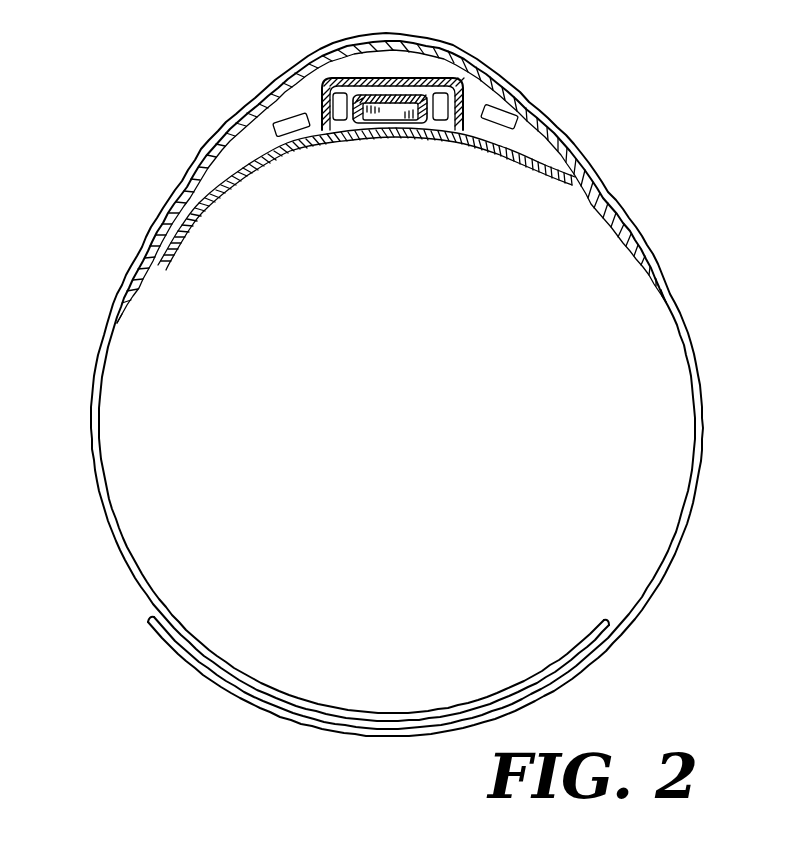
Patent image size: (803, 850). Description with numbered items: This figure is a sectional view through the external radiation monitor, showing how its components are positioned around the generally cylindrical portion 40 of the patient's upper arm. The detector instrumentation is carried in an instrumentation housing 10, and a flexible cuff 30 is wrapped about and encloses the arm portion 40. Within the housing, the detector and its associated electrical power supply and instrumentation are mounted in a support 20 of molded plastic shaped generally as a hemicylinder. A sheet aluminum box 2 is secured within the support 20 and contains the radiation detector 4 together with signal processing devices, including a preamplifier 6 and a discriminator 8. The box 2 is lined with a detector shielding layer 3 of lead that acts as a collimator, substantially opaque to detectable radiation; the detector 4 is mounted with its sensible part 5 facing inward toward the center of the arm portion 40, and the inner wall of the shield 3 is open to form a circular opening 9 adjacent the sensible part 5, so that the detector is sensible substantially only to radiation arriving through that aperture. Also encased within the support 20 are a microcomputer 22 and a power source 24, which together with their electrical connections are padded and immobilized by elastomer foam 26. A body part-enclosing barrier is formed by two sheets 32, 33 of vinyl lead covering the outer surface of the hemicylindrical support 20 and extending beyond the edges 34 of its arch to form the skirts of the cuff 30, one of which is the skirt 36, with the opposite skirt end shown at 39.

The sheet aluminum box 2 is at (355, 78).
The detector shielding layer 3 is at (428, 78).
The radiation detector 4 is at (378, 130).
The sensible part 5 is at (392, 130).
The preamplifier 6 is at (340, 128).
The discriminator 8 is at (437, 130).
The circular opening 9 is at (410, 130).
The instrumentation housing 10 is at (548, 62).
The support 20 is at (608, 190).
The microcomputer 22 is at (261, 104).
The power source 24 is at (530, 110).
The elastomer foam 26 is at (424, 15).
The flexible cuff 30 is at (233, 712).
The sheet of vinyl lead 32 is at (130, 265).
The sheet of vinyl lead 33 is at (397, 385).
The edges of the arch 34 is at (118, 318).
The skirt 36 is at (177, 620).
The band inner end 39 is at (662, 560).
The cylindrical portion of the patient's upper arm 40 is at (409, 431).